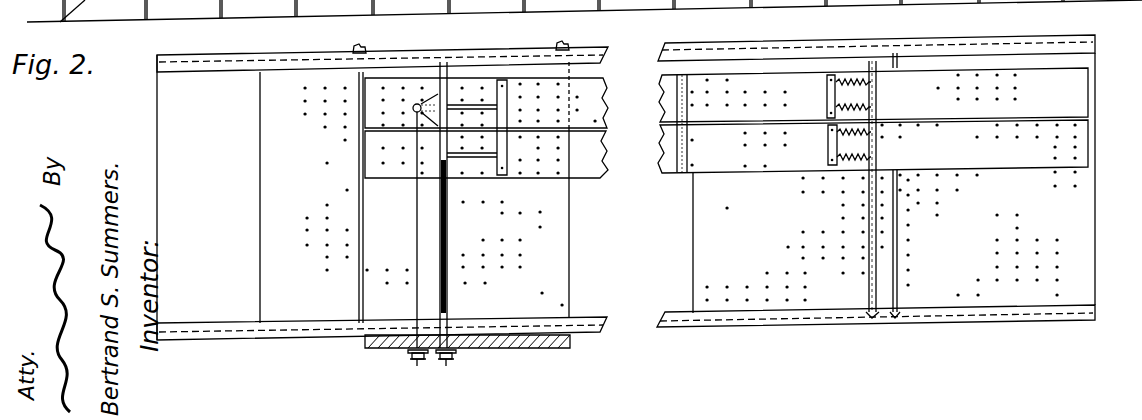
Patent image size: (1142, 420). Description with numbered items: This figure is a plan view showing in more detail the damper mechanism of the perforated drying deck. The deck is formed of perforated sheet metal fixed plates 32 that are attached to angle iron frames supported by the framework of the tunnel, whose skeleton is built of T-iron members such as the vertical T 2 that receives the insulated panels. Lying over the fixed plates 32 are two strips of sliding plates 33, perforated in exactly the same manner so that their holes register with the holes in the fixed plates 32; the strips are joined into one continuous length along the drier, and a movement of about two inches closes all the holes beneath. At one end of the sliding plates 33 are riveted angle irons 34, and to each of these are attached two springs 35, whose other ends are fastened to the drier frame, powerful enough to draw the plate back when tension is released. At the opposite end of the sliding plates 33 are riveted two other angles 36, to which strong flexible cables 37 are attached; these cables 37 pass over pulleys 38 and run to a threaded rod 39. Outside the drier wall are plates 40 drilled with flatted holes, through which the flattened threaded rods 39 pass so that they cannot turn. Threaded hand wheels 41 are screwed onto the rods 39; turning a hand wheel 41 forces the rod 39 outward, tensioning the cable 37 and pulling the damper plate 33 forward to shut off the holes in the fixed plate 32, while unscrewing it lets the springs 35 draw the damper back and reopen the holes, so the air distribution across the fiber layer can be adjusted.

The vertical T 2 is at (354, 49).
The fixed plate 32 is at (568, 272).
The sliding plate 33 is at (588, 173).
The angle iron 34 is at (826, 135).
The spring 35 is at (846, 102).
The angle 36 is at (500, 88).
The flexible cable 37 is at (480, 160).
The pulley 38 is at (416, 104).
The threaded rod 39 is at (443, 367).
The plate 40 is at (411, 350).
The hand wheel 41 is at (415, 362).